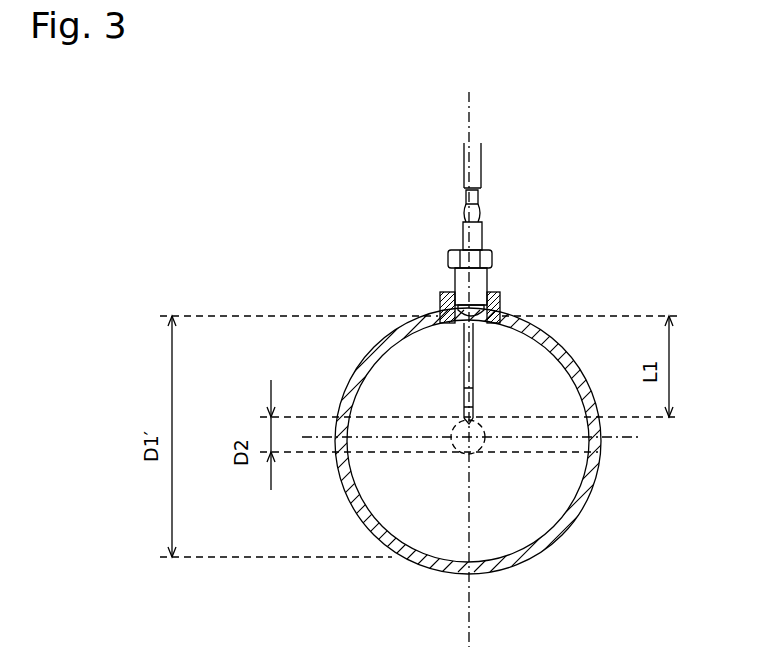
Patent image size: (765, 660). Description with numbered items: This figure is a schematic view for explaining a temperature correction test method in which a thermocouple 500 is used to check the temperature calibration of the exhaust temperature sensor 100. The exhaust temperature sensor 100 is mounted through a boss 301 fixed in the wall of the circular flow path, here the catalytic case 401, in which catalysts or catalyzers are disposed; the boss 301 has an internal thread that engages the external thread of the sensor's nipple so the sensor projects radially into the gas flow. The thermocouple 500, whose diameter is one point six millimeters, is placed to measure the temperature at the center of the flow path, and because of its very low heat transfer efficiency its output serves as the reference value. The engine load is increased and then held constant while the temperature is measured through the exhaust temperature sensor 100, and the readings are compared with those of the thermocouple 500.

The exhaust temperature sensor 100 is at (493, 230).
The boss 301 is at (500, 293).
The catalytic case 401 is at (547, 545).
The thermocouple 500 is at (465, 488).